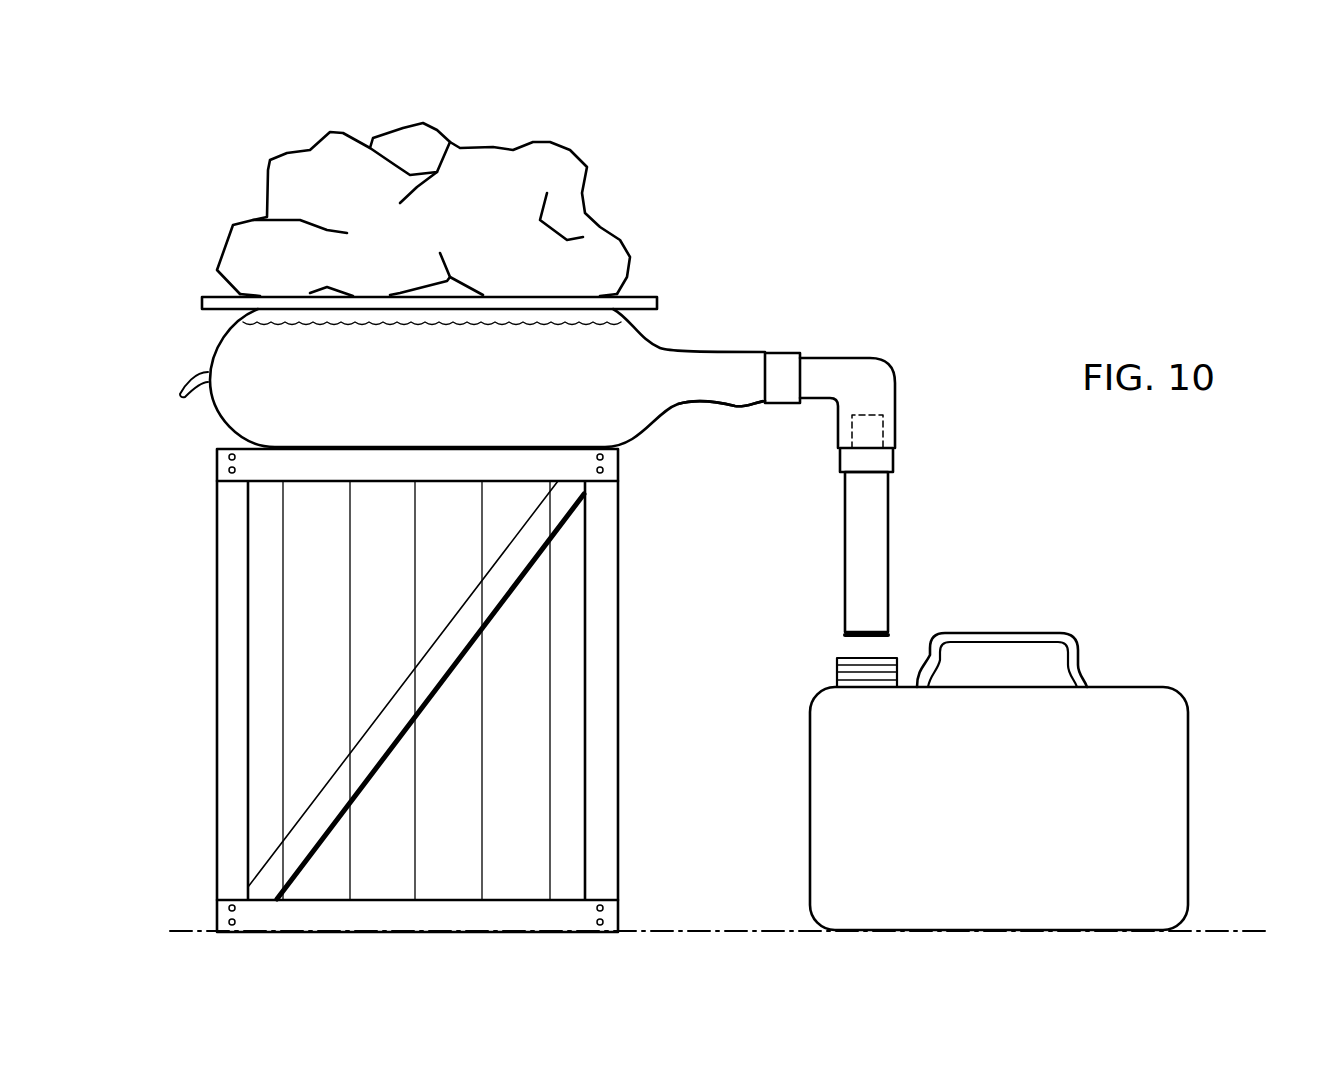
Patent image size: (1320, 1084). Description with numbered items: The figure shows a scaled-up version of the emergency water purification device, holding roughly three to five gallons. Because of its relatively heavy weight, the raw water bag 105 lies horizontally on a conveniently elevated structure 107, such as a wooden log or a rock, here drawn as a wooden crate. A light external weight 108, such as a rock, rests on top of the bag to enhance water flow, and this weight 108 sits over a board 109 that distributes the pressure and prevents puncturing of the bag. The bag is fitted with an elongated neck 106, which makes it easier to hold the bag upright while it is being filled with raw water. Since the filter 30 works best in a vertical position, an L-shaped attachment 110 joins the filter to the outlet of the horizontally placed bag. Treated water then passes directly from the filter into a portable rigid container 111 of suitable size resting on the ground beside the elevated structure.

The external weight 108 is at (420, 122).
The board 109 is at (638, 297).
The raw water bag 105 is at (632, 358).
The elongated neck 106 is at (697, 408).
The attachment 110 is at (882, 353).
The filter 30 is at (843, 523).
The elevated structure 107 is at (619, 523).
The portable rigid container 111 is at (812, 773).